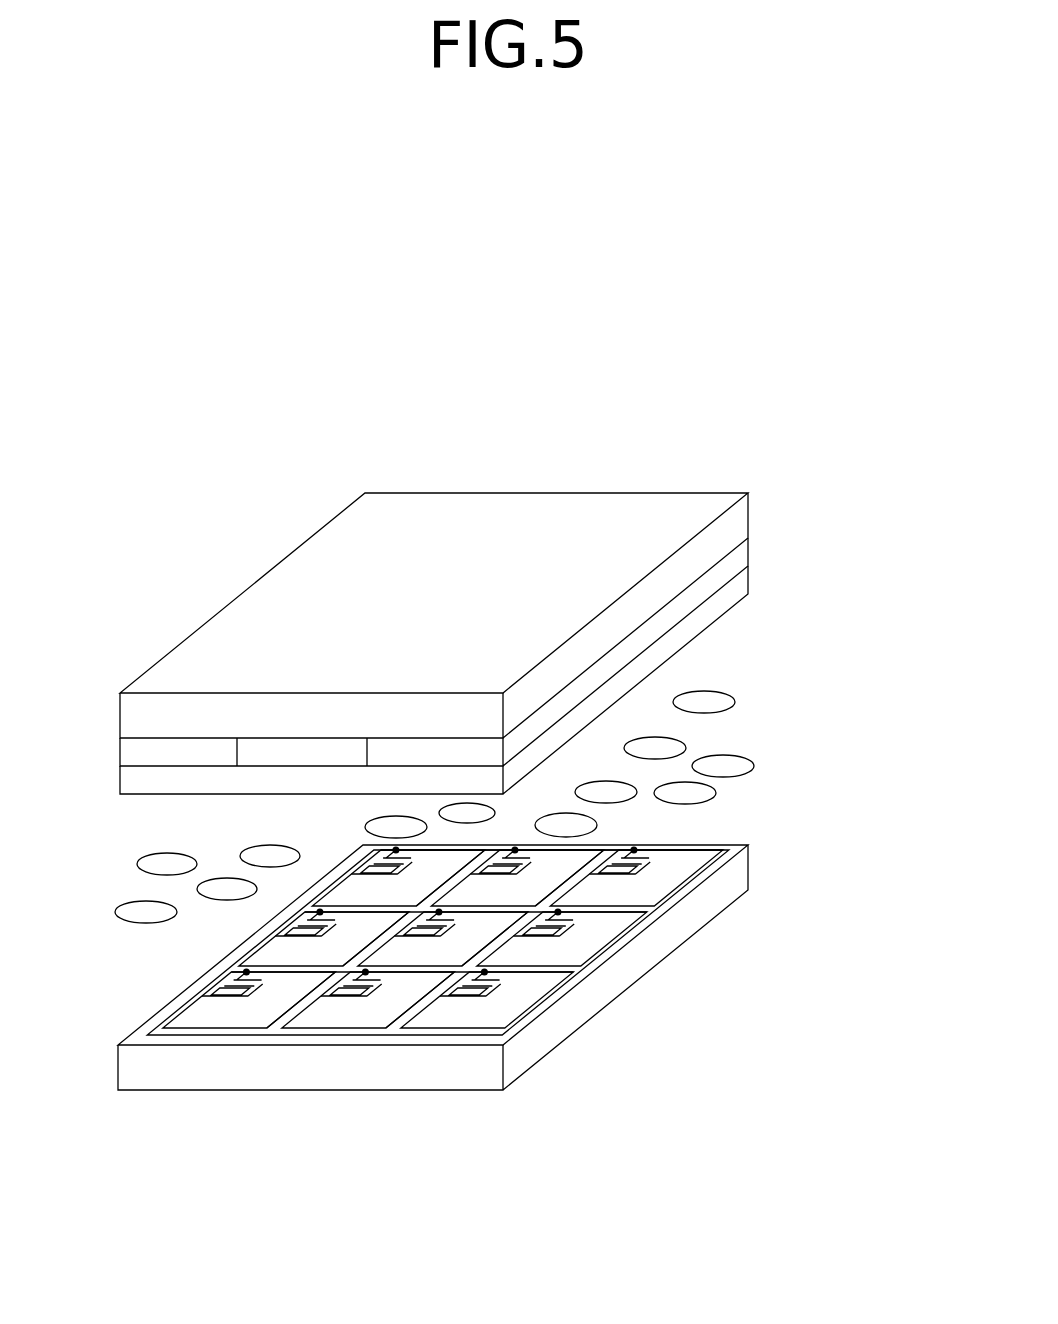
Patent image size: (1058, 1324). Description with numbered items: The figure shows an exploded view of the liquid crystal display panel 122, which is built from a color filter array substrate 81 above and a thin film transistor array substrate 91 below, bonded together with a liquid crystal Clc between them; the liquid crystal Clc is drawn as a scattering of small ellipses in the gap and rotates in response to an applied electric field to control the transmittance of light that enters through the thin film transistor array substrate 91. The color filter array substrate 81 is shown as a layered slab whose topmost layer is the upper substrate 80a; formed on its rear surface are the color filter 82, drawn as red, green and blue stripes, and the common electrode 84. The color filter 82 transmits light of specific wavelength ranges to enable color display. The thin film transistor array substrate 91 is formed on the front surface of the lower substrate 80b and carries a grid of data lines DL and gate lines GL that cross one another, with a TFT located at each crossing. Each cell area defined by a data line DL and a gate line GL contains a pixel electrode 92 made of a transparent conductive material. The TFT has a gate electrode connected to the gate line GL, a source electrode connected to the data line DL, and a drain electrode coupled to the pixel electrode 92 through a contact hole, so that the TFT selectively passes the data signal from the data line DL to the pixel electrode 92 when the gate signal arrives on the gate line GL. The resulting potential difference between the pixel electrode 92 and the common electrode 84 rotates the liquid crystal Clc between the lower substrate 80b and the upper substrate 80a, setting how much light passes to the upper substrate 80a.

The liquid crystal display panel 122 is at (397, 335).
The color filter array substrate 81 is at (838, 470).
The upper substrate 80a is at (745, 517).
The color filter 82 is at (747, 553).
The common electrode 84 is at (747, 583).
The liquid crystal Clc is at (735, 704).
The thin film transistor array substrate 91 is at (818, 814).
The lower substrate 80b is at (742, 878).
The pixel electrode 92 is at (513, 997).
The gate line GL is at (647, 912).
The data line DL is at (392, 1033).
The thin film transistor TFT is at (480, 990).